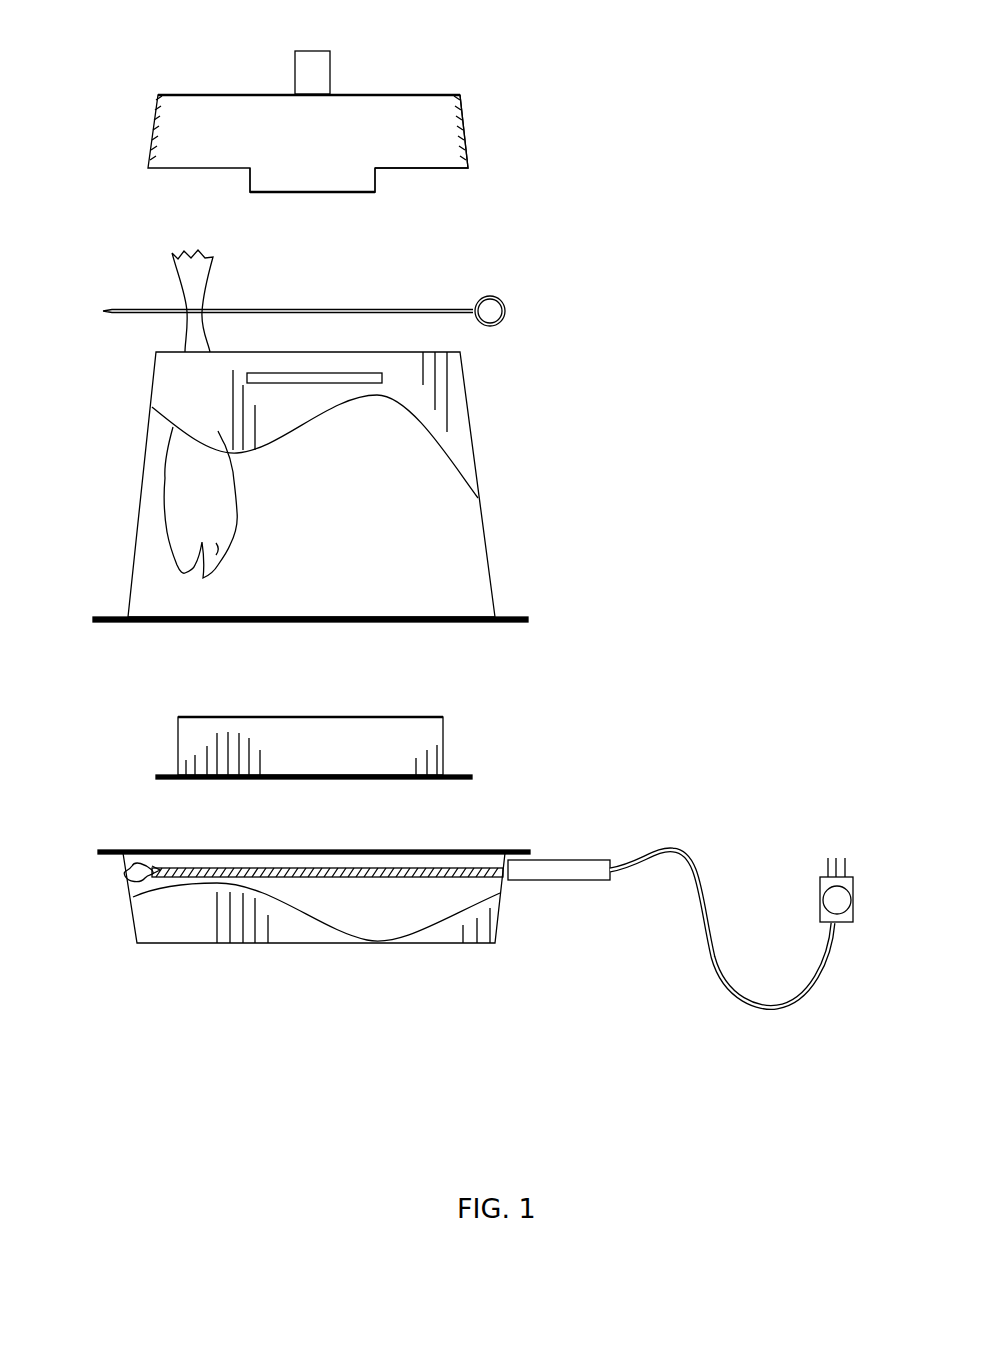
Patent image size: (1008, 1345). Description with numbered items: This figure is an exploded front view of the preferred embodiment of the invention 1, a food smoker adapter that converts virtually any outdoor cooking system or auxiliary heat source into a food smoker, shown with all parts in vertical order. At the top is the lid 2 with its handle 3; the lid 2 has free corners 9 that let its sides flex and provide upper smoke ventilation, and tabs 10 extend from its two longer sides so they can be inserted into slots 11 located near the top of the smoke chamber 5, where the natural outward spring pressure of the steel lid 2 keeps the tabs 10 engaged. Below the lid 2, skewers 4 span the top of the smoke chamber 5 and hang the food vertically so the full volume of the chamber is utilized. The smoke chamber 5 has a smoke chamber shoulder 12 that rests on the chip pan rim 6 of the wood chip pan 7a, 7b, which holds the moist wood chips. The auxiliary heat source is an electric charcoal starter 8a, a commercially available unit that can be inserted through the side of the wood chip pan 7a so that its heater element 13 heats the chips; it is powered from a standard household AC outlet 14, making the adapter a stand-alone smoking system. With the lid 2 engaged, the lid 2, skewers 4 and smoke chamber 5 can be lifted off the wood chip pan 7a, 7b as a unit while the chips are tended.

The invention 1 is at (608, 495).
The lid 2 is at (428, 91).
The handle 3 is at (336, 53).
The skewers 4 is at (513, 302).
The smoke chamber 5 is at (472, 438).
The chip pan rim 6 is at (108, 852).
The wood chip pan 7a is at (508, 918).
The wood chip pan 7b is at (427, 715).
The electric charcoal starter 8a is at (570, 850).
The free corners 9 is at (467, 170).
The tabs 10 is at (378, 193).
The slots 11 is at (295, 385).
The smoke chamber shoulder 12 is at (528, 610).
The heater element 13 is at (372, 880).
The standard household AC outlet 14 is at (702, 852).